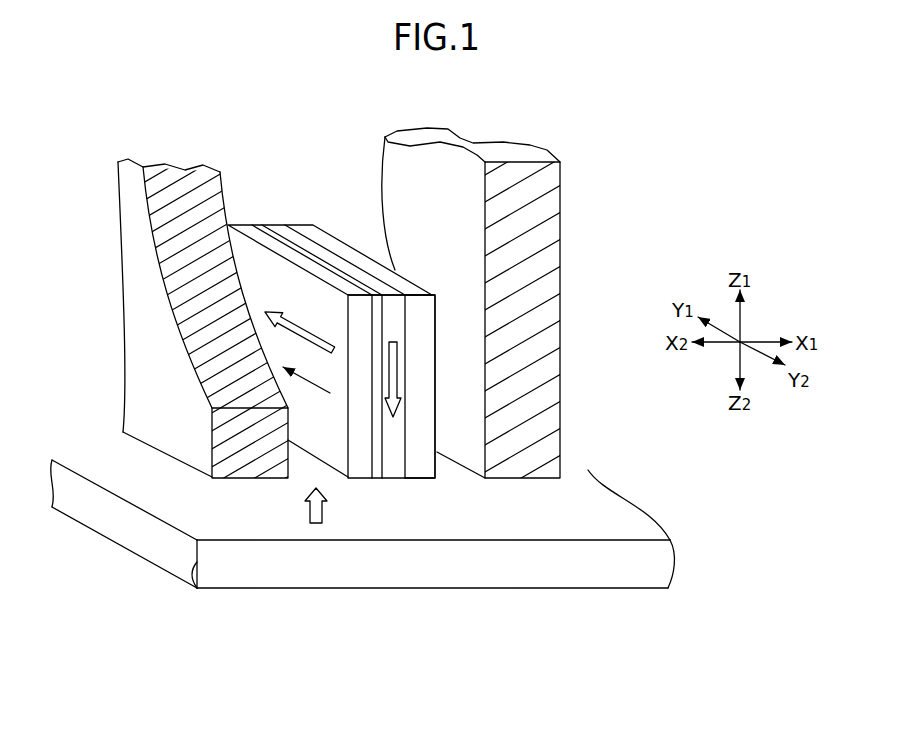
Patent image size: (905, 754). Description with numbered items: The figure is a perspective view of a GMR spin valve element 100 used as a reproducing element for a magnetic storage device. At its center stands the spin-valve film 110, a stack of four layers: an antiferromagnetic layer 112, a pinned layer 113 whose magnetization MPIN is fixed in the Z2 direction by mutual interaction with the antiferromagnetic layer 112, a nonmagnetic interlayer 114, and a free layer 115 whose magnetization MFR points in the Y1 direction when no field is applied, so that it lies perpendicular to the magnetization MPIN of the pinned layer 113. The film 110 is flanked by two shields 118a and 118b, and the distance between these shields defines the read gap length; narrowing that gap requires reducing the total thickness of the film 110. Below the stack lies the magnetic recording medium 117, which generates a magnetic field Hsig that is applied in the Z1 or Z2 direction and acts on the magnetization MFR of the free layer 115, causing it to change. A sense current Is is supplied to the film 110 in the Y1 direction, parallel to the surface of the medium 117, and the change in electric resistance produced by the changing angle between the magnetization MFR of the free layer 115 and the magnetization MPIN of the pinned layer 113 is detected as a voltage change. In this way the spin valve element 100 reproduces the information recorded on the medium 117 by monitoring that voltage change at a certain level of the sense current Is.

The spin valve element 100 is at (278, 150).
The spin-valve film 110 is at (345, 466).
The antiferromagnetic layer 112 is at (420, 478).
The pinned layer 113 is at (393, 478).
The nonmagnetic interlayer 114 is at (378, 478).
The free layer 115 is at (357, 478).
The magnetic recording medium 117 is at (180, 579).
The shield 118a is at (168, 177).
The shield 118b is at (522, 170).
The magnetization of the free layer MFR is at (307, 330).
The magnetization of the pinned layer MPIN is at (397, 373).
The magnetic field Hsig is at (317, 523).
The sense current Is is at (315, 387).